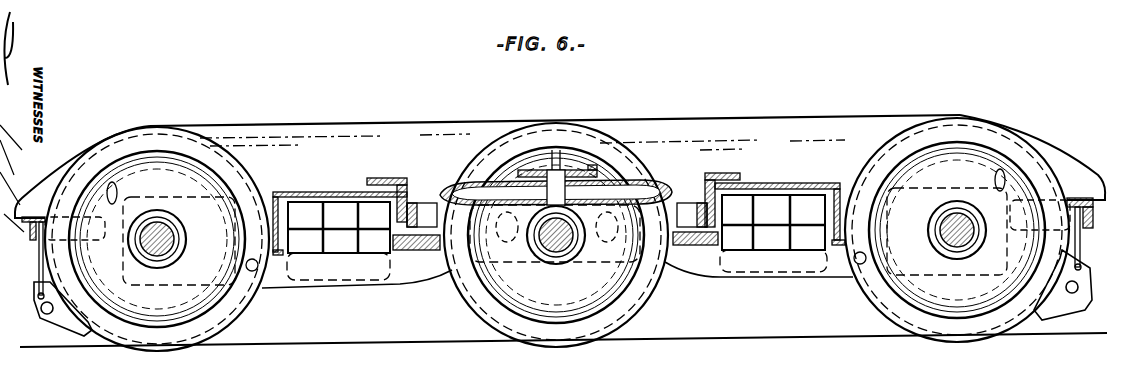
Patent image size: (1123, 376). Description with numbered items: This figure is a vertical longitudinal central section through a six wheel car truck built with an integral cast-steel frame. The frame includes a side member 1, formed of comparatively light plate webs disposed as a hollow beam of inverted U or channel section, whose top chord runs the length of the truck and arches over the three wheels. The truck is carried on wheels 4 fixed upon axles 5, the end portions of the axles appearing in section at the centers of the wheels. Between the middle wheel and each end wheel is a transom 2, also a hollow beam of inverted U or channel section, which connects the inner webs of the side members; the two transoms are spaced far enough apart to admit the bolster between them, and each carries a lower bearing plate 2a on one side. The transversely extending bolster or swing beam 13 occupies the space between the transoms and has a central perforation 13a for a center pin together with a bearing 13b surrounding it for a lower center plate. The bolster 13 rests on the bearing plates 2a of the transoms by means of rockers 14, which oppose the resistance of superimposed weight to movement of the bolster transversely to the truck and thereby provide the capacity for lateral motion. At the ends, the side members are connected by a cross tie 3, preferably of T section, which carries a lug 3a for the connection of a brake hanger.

The side member 1 is at (490, 121).
The transom 2 is at (338, 192).
The bearing plate 2a is at (424, 251).
The cross tie 3 is at (35, 232).
The lug 3a is at (48, 227).
The wheel 4 is at (236, 333).
The axle 5 is at (170, 242).
The bolster 13 is at (640, 185).
The central perforation 13a is at (552, 174).
The bearing 13b is at (592, 168).
The rocker 14 is at (557, 218).